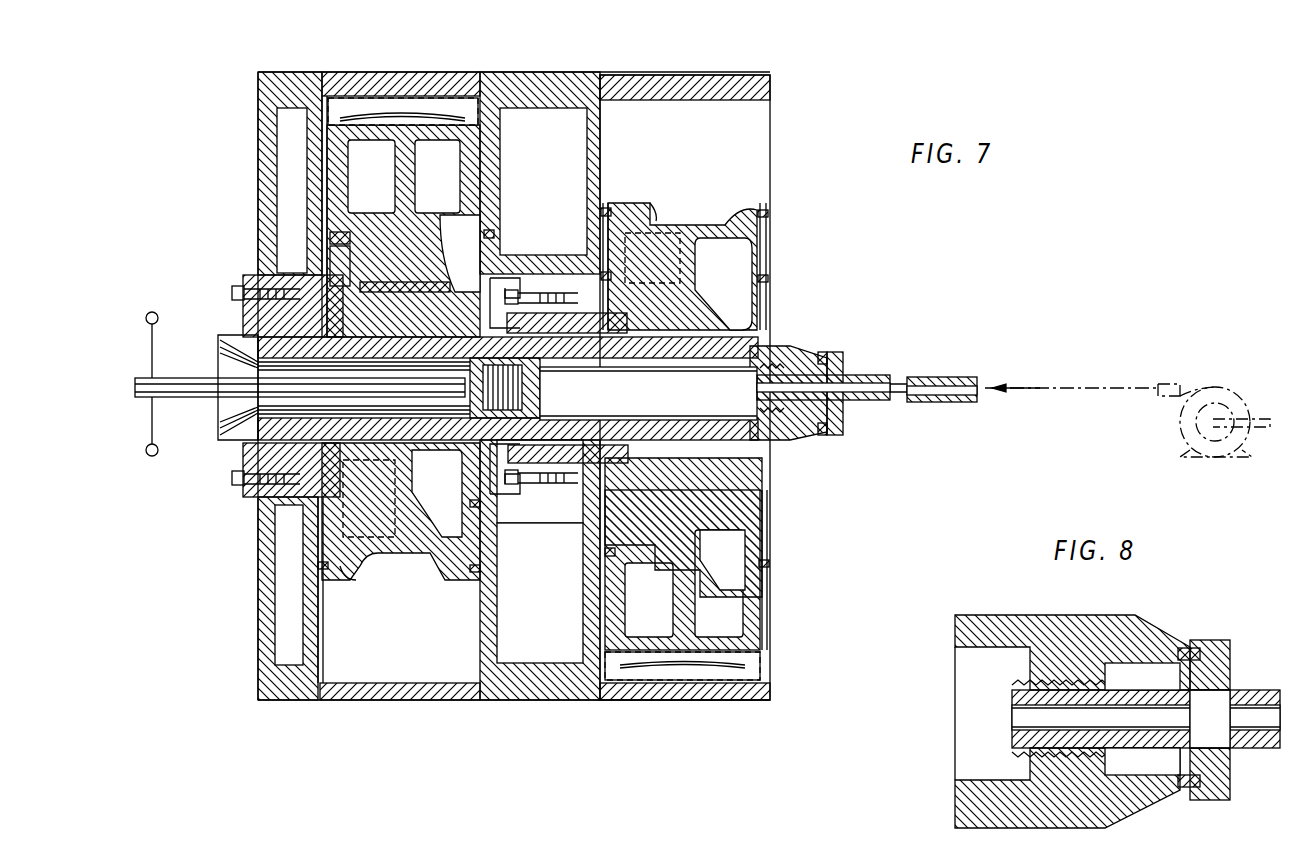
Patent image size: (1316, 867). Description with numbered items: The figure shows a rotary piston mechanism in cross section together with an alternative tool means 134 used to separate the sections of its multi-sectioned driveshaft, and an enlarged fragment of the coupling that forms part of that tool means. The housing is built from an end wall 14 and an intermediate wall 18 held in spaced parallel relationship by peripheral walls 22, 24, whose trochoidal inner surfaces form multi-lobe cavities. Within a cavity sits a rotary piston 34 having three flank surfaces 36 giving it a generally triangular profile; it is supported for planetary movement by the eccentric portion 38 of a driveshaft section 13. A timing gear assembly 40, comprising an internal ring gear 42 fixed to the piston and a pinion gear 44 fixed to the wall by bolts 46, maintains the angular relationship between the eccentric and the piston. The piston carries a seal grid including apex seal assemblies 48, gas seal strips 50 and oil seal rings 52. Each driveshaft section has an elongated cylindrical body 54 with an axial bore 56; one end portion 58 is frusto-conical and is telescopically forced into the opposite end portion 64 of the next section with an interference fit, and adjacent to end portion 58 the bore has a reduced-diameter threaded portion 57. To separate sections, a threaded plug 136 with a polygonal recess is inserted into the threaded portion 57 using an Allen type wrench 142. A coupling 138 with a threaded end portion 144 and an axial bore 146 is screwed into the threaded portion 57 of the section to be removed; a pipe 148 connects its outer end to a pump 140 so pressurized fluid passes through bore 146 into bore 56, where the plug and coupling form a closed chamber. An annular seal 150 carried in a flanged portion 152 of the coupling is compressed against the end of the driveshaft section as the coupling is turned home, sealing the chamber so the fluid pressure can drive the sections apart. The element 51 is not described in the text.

In FIG. 7, the driveshaft section 13 is at (305, 316).
In FIG. 7, the end wall 14 is at (264, 150).
In FIG. 7, the intermediate wall 18 is at (556, 82).
In FIG. 7, the peripheral wall 22 is at (404, 72).
In FIG. 7, the peripheral wall 24 is at (704, 76).
In FIG. 7, the rotary piston 34 is at (695, 208).
In FIG. 7, the flank surface 36 is at (650, 208).
In FIG. 7, the eccentric portion 38 is at (402, 292).
In FIG. 7, the timing gear assembly 40 is at (354, 295).
In FIG. 7, the internal ring gear 42 is at (330, 240).
In FIG. 7, the pinion gear 44 is at (362, 338).
In FIG. 7, the bolt 46 is at (236, 296).
In FIG. 7, the apex seal assembly 48 is at (438, 108).
In FIG. 7, the gas seal strip 50 is at (762, 206).
In FIG. 7, the member 51 is at (466, 289).
In FIG. 7, the oil seal ring 52 is at (496, 234).
In FIG. 7, the cylindrical body 54 is at (610, 206).
In FIG. 7, the axial bore 56 is at (240, 416).
In FIG. 8, the axial bore 56 is at (1004, 648).
In FIG. 7, the threaded portion 57 is at (478, 376).
In FIG. 8, the threaded portion 57 is at (1082, 686).
In FIG. 7, the end portion 58 is at (548, 380).
In FIG. 7, the end portion 64 is at (236, 342).
In FIG. 7, the tool means 134 is at (912, 367).
In FIG. 7, the threaded plug 136 is at (476, 424).
In FIG. 7, the coupling 138 is at (878, 400).
In FIG. 8, the coupling 138 is at (1232, 662).
In FIG. 7, the pump 140 is at (1258, 400).
In FIG. 7, the Allen type wrench 142 is at (134, 388).
In FIG. 7, the threaded end portion 144 is at (762, 396).
In FIG. 8, the threaded end portion 144 is at (1020, 760).
In FIG. 7, the axial bore 146 is at (876, 408).
In FIG. 8, the axial bore 146 is at (1012, 710).
In FIG. 7, the pipe 148 is at (972, 380).
In FIG. 7, the annular seal 150 is at (830, 436).
In FIG. 8, the annular seal 150 is at (1218, 780).
In FIG. 7, the flanged portion 152 is at (844, 358).
In FIG. 8, the flanged portion 152 is at (1220, 798).